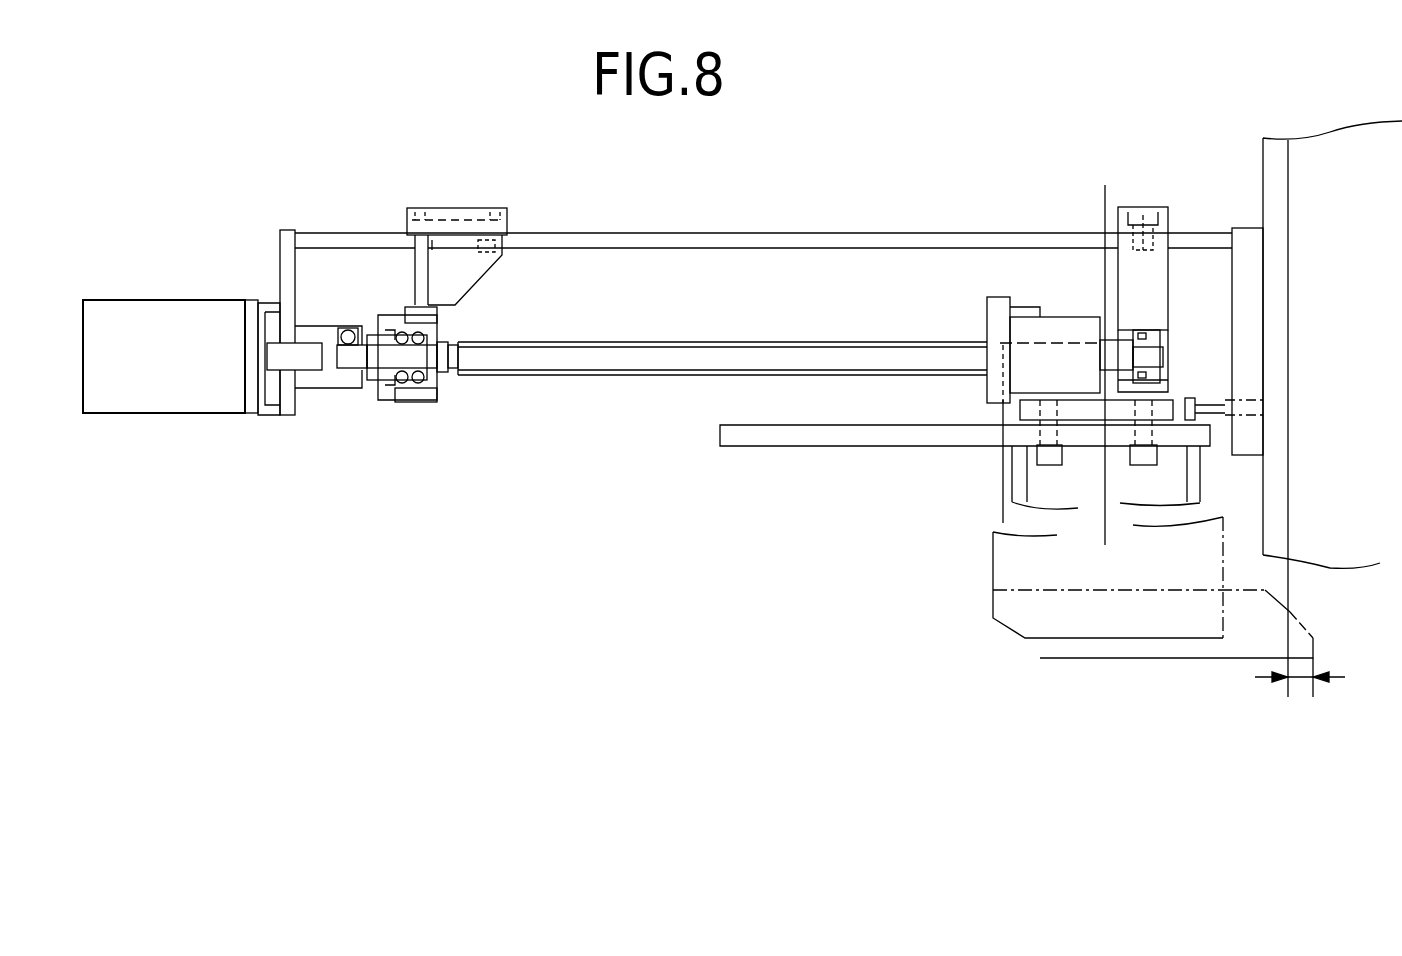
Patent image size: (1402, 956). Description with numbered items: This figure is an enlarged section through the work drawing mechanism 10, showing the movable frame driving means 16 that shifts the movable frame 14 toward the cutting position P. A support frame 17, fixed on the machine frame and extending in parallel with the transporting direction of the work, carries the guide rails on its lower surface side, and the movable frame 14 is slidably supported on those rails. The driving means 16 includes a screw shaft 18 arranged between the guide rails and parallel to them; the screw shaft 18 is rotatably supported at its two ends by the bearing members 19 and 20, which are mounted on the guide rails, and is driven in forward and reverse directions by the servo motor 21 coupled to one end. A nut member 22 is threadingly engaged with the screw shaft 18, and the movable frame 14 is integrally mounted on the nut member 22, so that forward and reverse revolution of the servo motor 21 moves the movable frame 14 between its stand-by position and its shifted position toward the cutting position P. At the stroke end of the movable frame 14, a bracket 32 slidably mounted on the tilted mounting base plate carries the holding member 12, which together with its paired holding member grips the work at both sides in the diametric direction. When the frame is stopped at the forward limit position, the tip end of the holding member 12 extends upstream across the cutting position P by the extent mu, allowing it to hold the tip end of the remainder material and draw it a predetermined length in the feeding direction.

The work drawing mechanism 10 is at (957, 199).
The holding member 12 is at (1252, 645).
The movable frame 14 is at (903, 446).
The movable frame driving means 16 is at (713, 291).
The support frame 17 is at (808, 245).
The screw shaft 18 is at (652, 362).
The bearing member 19 is at (1168, 328).
The bearing member 20 is at (403, 398).
The servo motor 21 is at (213, 387).
The nut member 22 is at (1050, 335).
The bracket 32 is at (1097, 617).
The cutting position P is at (1287, 488).
The extent of extension mu is at (1302, 680).